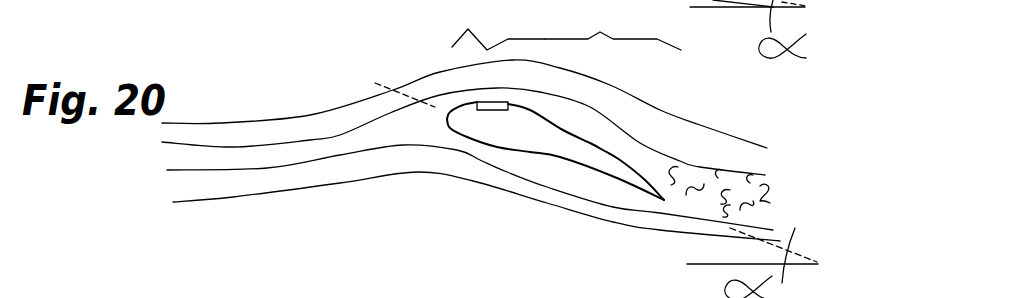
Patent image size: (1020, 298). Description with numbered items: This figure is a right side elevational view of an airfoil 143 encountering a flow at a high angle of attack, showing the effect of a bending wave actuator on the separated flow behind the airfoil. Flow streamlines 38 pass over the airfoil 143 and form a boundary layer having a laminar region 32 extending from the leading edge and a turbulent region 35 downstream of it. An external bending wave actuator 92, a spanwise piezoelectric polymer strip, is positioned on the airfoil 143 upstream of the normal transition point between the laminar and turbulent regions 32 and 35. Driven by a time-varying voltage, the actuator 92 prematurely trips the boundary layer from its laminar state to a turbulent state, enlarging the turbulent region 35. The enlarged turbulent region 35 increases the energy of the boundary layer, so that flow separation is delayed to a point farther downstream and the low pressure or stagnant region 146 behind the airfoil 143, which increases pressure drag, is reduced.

The flow streamlines 38 is at (243, 147).
The laminar region 32 is at (498, 25).
The turbulent region 35 is at (613, 25).
The external bending wave actuator 92 is at (488, 110).
The airfoil 143 is at (568, 160).
The low pressure or stagnant region 146 is at (770, 203).